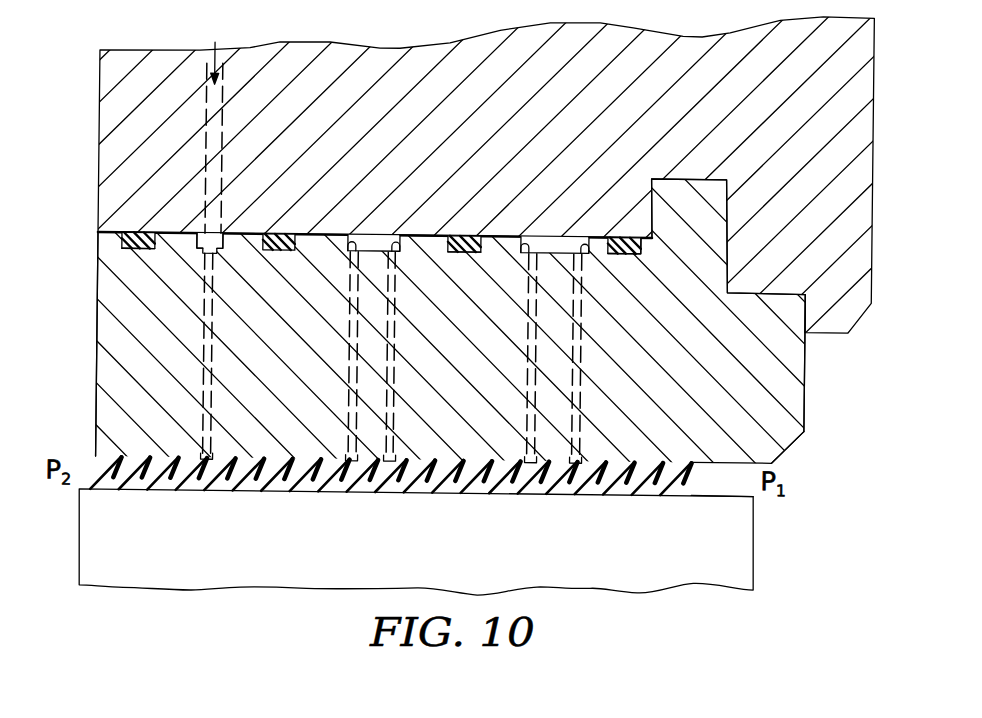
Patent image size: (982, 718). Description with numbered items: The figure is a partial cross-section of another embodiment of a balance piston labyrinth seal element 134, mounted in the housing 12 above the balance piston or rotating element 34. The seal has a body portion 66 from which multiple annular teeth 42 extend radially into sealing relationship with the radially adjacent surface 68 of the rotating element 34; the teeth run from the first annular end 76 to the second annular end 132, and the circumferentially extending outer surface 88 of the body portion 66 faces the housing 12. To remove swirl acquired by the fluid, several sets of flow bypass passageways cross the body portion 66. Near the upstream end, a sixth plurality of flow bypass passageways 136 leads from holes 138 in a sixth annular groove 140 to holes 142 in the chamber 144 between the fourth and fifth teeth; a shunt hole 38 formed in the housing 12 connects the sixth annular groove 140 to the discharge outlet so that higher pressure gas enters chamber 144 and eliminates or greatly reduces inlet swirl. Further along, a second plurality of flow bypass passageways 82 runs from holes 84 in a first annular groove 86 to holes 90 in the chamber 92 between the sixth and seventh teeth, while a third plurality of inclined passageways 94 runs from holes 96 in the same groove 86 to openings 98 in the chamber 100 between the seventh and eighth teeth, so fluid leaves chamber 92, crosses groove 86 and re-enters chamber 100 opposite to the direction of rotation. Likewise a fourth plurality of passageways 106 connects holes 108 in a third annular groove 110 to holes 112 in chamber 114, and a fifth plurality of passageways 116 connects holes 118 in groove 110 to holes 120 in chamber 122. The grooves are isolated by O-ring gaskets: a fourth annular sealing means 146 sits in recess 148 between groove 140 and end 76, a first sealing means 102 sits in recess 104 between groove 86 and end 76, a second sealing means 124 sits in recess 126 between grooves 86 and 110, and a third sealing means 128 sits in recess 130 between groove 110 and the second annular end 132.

The housing 12 is at (476, 113).
The balance piston or rotating element 34 is at (371, 576).
The shunt hole 38 is at (205, 157).
The annular teeth 42 is at (91, 491).
The body portion 66 is at (701, 371).
The radially adjacent surface 68 is at (734, 487).
The first annular end 76 is at (98, 314).
The second plurality of flow bypass passageways 82 is at (350, 339).
The third plurality of circumferentially spaced-apart openings or holes 84 is at (340, 247).
The first annular groove 86 is at (397, 230).
The circumferentially extending outer surface 88 is at (420, 232).
The fourth plurality of circumferentially spaced-apart openings or holes 90 is at (340, 455).
The space or chamber 92 is at (339, 492).
The third plurality of flow bypass passageways 94 is at (399, 338).
The fifth plurality of circumferentially spaced-apart openings or holes 96 is at (400, 247).
The sixth plurality of circumferentially spaced-apart openings 98 is at (398, 453).
The space or chamber 100 is at (375, 492).
The first annular sealing means 102 is at (288, 235).
The second annular groove or slotted recess 104 is at (224, 249).
The fourth plurality of flow bypass passageways 106 is at (530, 383).
The seventh plurality of circumferentially spaced-apart openings or holes 108 is at (530, 250).
The third annular groove 110 is at (578, 232).
The eighth plurality of circumferentially spaced-apart openings or holes 112 is at (522, 452).
The space or chamber 114 is at (520, 490).
The fifth plurality of flow bypass passageways 116 is at (585, 382).
The ninth plurality of circumferentially spaced-apart openings or holes 118 is at (582, 249).
The tenth plurality of circumferentially spaced-apart openings or holes 120 is at (590, 451).
The space or chamber 122 is at (564, 490).
The second annular sealing means 124 is at (466, 233).
The fourth annular groove or slotted recess 126 is at (464, 251).
The third annular sealing means 128 is at (630, 232).
The fifth annular groove or slotted recess 130 is at (640, 248).
The second annular end 132 is at (806, 409).
The balance piston labyrinth seal element 134 is at (806, 377).
The sixth plurality of flow bypass passageways 136 is at (205, 359).
The eleventh plurality of circumferentially spaced-apart openings or holes 138 is at (198, 249).
The sixth annular groove 140 is at (222, 234).
The twelfth plurality of circumferentially spaced-apart openings or holes 142 is at (202, 455).
The space or chamber 144 is at (190, 493).
The fourth annular sealing means 146 is at (131, 230).
The seventh annular groove or slotted recess 148 is at (128, 250).